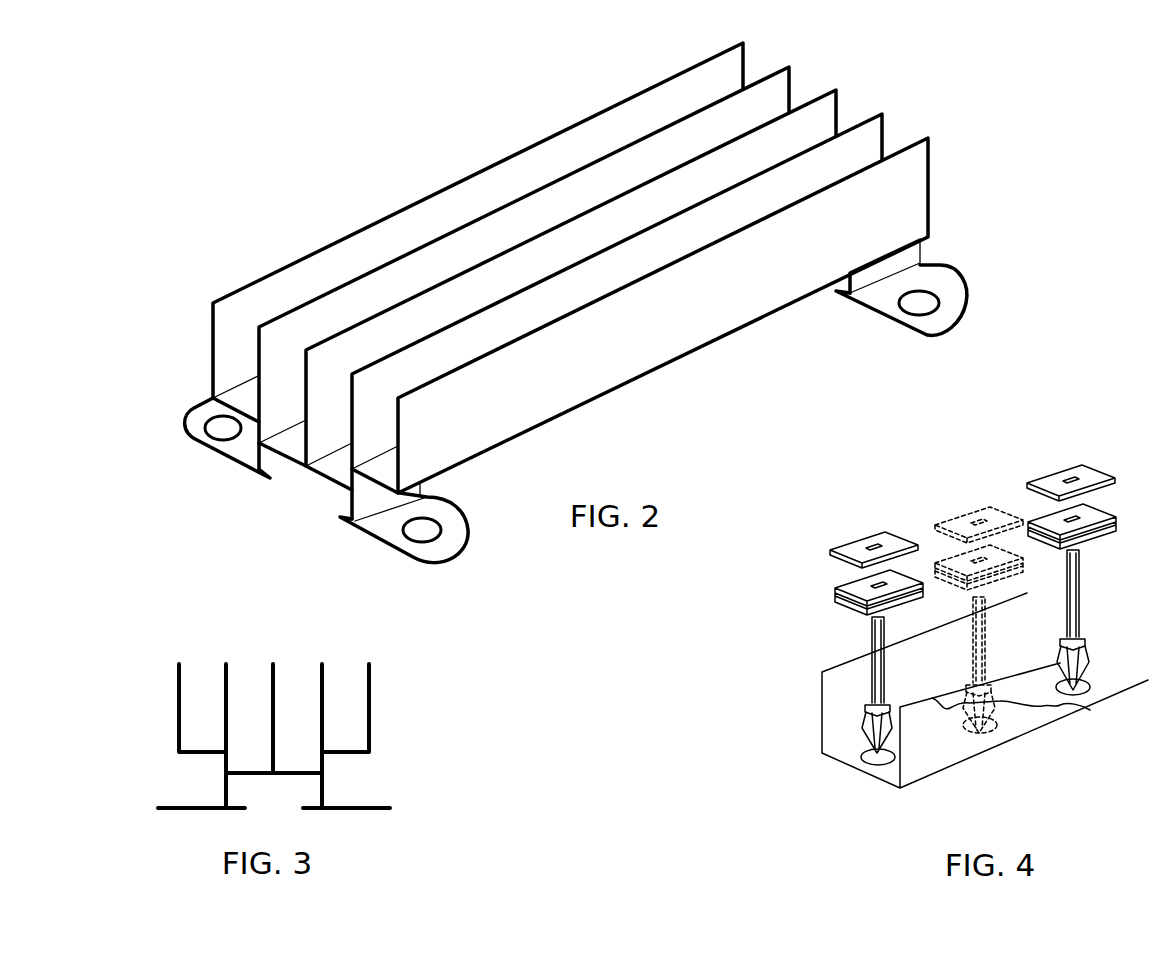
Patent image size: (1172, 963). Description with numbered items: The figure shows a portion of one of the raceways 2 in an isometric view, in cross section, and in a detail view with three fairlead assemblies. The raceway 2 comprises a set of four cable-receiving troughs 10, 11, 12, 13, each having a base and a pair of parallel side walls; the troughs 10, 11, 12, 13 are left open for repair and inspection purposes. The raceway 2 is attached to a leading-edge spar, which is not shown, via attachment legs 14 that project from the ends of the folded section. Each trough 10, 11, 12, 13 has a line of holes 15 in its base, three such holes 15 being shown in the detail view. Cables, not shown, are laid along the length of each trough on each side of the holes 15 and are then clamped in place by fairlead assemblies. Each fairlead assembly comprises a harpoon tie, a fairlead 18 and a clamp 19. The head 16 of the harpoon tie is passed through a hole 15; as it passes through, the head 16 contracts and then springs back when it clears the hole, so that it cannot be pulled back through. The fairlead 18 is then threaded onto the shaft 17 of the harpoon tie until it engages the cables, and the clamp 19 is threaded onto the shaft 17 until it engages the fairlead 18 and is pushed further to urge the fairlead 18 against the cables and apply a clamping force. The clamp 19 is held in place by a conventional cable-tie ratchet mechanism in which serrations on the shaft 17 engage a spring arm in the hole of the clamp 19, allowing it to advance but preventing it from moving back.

In FIG. 2, the raceway 2 is at (568, 315).
In FIG. 3, the raceway 2 is at (278, 718).
In FIG. 4, the raceway 2 is at (932, 506).
In FIG. 2, the cable-receiving trough 10 is at (282, 298).
In FIG. 2, the cable-receiving trough 11 is at (409, 282).
In FIG. 2, the cable-receiving trough 12 is at (540, 265).
In FIG. 2, the cable-receiving trough 13 is at (666, 252).
In FIG. 2, the attachment leg 14 is at (235, 462).
In FIG. 3, the attachment leg 14 is at (200, 813).
In FIG. 4, the hole 15 is at (876, 765).
In FIG. 4, the head of the harpoon tie 16 is at (862, 722).
In FIG. 4, the shaft of the harpoon tie 17 is at (872, 668).
In FIG. 4, the fairlead 18 is at (836, 592).
In FIG. 4, the clamp 19 is at (840, 548).